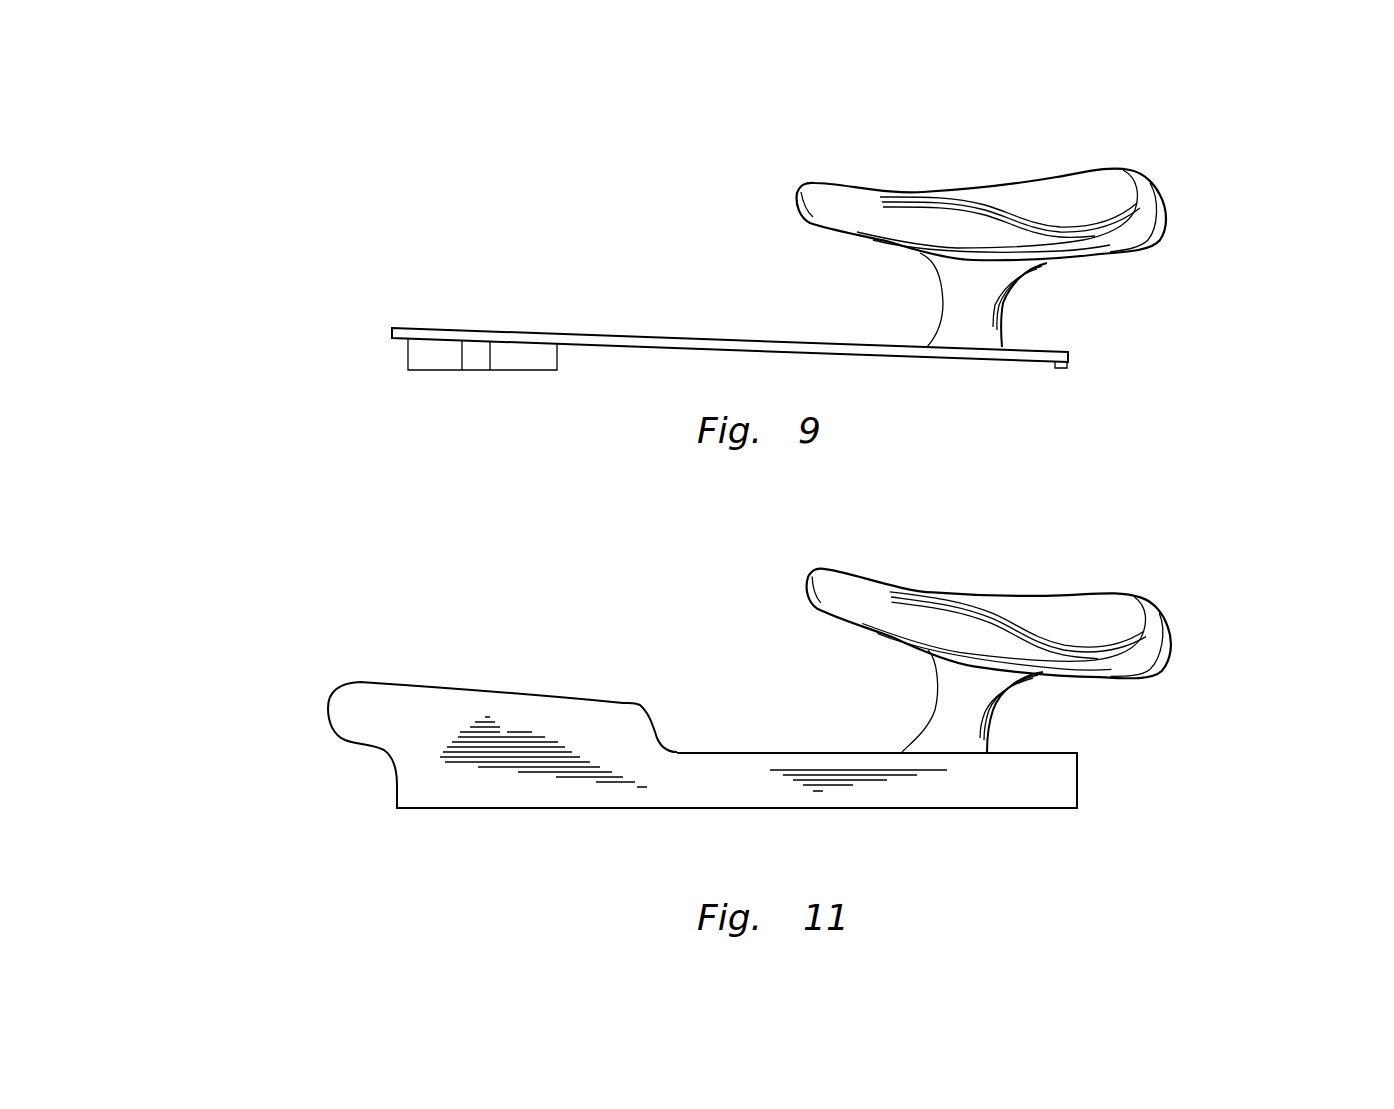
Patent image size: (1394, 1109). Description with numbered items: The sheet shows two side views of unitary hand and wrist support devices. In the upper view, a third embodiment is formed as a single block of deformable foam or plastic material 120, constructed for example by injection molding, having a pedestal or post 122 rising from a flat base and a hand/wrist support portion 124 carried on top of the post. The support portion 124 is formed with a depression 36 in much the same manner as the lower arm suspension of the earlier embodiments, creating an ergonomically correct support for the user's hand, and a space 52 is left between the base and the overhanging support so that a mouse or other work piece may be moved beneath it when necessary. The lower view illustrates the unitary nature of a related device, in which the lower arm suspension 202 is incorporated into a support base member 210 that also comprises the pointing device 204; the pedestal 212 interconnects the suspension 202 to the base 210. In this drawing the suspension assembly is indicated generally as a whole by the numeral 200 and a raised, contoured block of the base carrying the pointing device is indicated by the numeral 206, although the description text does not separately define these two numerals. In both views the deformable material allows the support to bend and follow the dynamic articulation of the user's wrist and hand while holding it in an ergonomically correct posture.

In FIG. 9, the depression 36 is at (1070, 213).
In FIG. 9, the space 52 is at (818, 302).
In FIG. 9, the single block of deformable foam or plastic material 120 is at (1218, 212).
In FIG. 9, the pedestal or post 122 is at (1007, 293).
In FIG. 9, the hand/wrist support portion 124 is at (1131, 143).
In FIG. 11, the seat assembly 200 is at (986, 554).
In FIG. 11, the lower arm suspension 202 is at (1152, 602).
In FIG. 11, the pointing device 204 is at (614, 721).
In FIG. 11, the raised block 206 is at (467, 690).
In FIG. 11, the support base member 210 is at (763, 793).
In FIG. 11, the pedestal 212 is at (1097, 708).